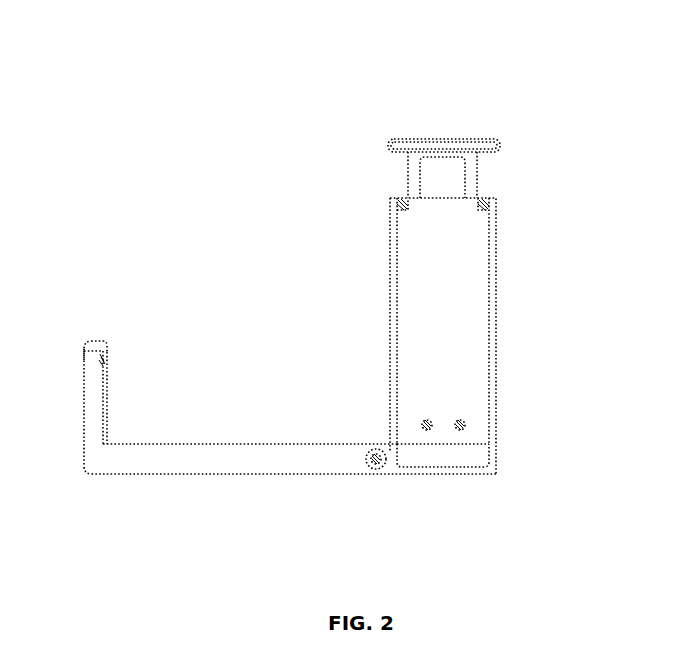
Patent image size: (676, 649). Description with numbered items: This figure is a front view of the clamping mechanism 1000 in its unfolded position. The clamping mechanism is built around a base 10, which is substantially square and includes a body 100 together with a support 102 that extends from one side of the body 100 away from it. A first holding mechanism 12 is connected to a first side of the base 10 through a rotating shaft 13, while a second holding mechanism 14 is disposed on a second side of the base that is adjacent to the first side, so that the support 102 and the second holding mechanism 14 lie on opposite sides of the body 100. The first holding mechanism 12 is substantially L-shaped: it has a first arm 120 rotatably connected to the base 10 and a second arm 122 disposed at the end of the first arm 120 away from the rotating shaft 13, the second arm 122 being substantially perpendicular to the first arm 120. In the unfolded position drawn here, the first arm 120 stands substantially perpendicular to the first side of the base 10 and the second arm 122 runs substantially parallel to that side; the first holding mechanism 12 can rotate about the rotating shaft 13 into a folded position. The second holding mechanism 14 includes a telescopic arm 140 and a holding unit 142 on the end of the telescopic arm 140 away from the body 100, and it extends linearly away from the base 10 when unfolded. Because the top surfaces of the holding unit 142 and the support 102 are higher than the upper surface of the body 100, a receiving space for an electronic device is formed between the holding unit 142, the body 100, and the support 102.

The clamping mechanism 1000 is at (73, 46).
The base 10 is at (590, 352).
The body 100 is at (445, 345).
The support 102 is at (462, 458).
The first holding mechanism 12 is at (245, 222).
The first arm 120 is at (235, 453).
The second arm 122 is at (108, 350).
The rotating shaft 13 is at (372, 465).
The second holding mechanism 14 is at (558, 93).
The telescopic arm 140 is at (465, 163).
The holding unit 142 is at (452, 143).